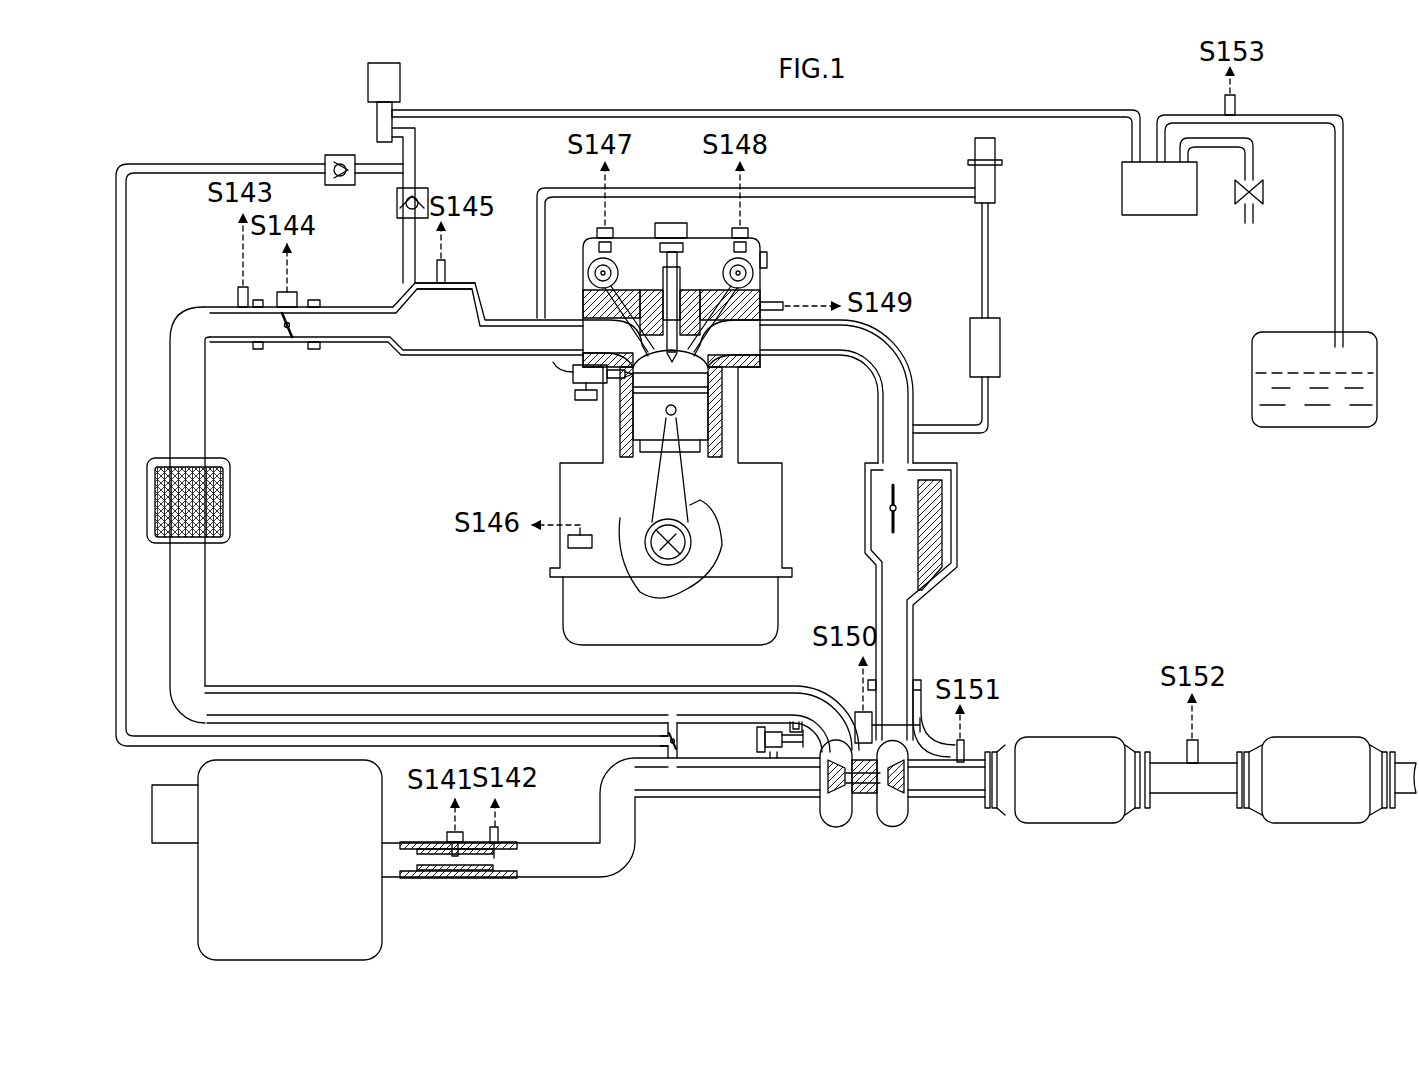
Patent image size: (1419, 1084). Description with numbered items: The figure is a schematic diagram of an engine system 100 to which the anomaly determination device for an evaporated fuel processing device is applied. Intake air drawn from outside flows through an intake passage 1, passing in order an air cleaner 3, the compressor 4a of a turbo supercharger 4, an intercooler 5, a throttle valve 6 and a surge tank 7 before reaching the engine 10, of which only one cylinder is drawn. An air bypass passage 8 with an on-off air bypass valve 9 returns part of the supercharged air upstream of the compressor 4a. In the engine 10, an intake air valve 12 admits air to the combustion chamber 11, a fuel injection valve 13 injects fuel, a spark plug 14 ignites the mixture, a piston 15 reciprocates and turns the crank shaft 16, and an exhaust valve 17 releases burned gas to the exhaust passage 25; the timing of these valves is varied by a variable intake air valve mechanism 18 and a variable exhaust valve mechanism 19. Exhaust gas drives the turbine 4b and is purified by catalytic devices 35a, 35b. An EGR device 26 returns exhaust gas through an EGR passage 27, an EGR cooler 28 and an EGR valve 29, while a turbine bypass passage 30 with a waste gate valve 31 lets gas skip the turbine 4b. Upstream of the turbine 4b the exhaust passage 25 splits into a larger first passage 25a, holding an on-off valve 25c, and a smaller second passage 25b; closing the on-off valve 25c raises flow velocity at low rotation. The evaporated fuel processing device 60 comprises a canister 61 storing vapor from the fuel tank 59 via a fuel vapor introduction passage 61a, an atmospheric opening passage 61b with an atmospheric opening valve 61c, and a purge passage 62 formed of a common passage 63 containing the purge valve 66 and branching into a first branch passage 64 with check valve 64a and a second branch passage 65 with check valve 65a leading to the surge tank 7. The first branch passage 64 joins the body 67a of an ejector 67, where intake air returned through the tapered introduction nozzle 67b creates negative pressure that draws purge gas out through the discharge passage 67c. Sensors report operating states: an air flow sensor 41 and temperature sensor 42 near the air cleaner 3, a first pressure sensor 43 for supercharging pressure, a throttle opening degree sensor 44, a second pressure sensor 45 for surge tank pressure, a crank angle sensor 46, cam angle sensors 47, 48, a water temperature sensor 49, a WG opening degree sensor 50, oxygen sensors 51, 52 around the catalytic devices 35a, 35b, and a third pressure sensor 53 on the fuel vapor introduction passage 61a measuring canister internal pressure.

The intake passage 1 is at (592, 878).
The air cleaner 3 is at (382, 940).
The turbo supercharger 4 is at (860, 826).
The compressor 4a is at (835, 815).
The turbine 4b is at (890, 818).
The intercooler 5 is at (232, 500).
The throttle valve 6 is at (288, 330).
The surge tank 7 is at (460, 290).
The air bypass passage 8 is at (797, 745).
The air bypass valve 9 is at (757, 738).
The engine 10 is at (525, 462).
The combustion chamber 11 is at (657, 360).
The intake air valve 12 is at (620, 307).
The fuel injection valve 13 is at (572, 378).
The spark plug 14 is at (715, 375).
The piston 15 is at (720, 410).
The crank shaft 16 is at (692, 552).
The exhaust valve 17 is at (718, 317).
The variable intake air valve mechanism 18 is at (590, 270).
The variable exhaust valve mechanism 19 is at (755, 280).
The exhaust passage 25 is at (873, 395).
The first passage 25a is at (865, 520).
The second passage 25b is at (957, 490).
The on-off valve 25c is at (890, 520).
The EGR device 26 is at (1083, 380).
The EGR passage 27 is at (988, 410).
The EGR cooler 28 is at (1000, 345).
The EGR valve 29 is at (997, 180).
The turbine bypass passage 30 is at (915, 770).
The waste gate valve 31 is at (925, 715).
The catalytic device 35a is at (1067, 823).
The catalytic device 35b is at (1318, 823).
The air flow sensor 41 is at (462, 860).
The temperature sensor 42 is at (500, 840).
The first pressure sensor 43 is at (237, 295).
The throttle opening degree sensor 44 is at (297, 297).
The second pressure sensor 45 is at (446, 270).
The crank angle sensor 46 is at (568, 542).
The intake air side cam angle sensor 47 is at (597, 235).
The exhaust side cam angle sensor 48 is at (748, 237).
The temperature sensor 49 is at (785, 303).
The WG opening degree sensor 50 is at (855, 715).
The O2 sensor 51 is at (965, 748).
The O2 sensor 52 is at (1200, 750).
The third pressure sensor 53 is at (1237, 105).
The fuel tank 59 is at (1268, 332).
The evaporated fuel processing device 60 is at (1360, 108).
The canister 61 is at (1160, 215).
The fuel vapor introduction passage 61a is at (1345, 235).
The atmospheric opening passage 61b is at (1255, 170).
The atmospheric opening valve 61c is at (1265, 195).
The purge passage 62 is at (478, 95).
The common passage 63 is at (675, 108).
The first branch passage 64 is at (235, 162).
The check valve 64a is at (335, 157).
The second branch passage 65 is at (403, 270).
The check valve 65a is at (397, 205).
The purge valve 66 is at (368, 80).
The ejector 67 is at (650, 730).
The body 67a is at (680, 750).
The introduction nozzle 67b is at (687, 723).
The discharge passage 67c is at (667, 757).
The engine system 100 is at (1265, 555).